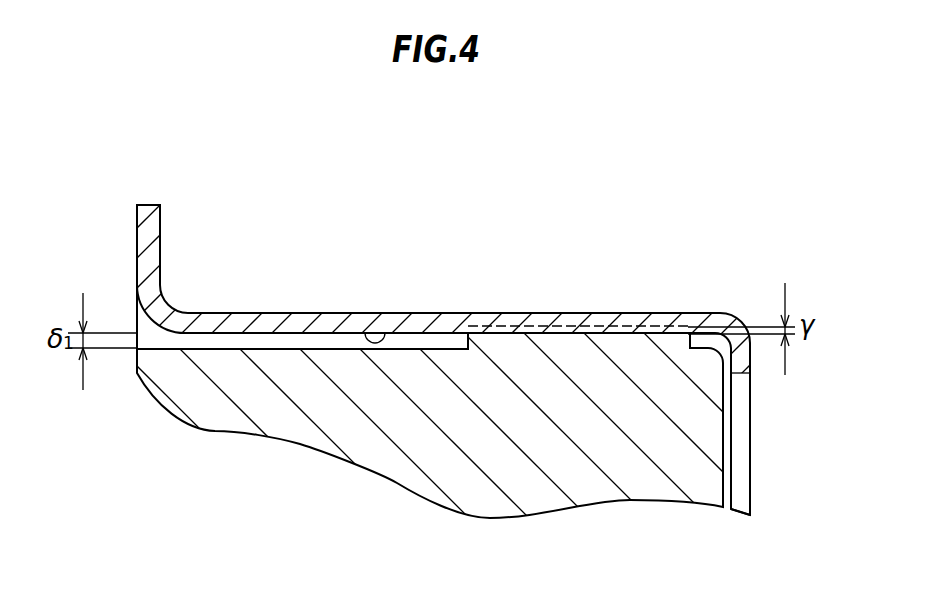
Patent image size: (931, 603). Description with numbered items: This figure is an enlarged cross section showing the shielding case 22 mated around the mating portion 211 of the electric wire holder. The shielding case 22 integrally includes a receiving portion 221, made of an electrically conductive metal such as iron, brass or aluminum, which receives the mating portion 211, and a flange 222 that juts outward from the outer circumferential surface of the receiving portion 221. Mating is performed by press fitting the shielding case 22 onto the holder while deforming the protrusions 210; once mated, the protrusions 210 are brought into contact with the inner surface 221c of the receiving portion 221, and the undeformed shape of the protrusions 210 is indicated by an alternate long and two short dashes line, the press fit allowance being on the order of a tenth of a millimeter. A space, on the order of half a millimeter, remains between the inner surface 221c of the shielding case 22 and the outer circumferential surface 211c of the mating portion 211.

The shielding case 22 is at (773, 494).
The protrusions 210 is at (513, 342).
The mating portion 211 is at (497, 503).
The outer circumferential surface 211c is at (260, 349).
The receiving portion 221 is at (652, 322).
The inner surface 221c is at (388, 333).
The flange 222 is at (152, 227).